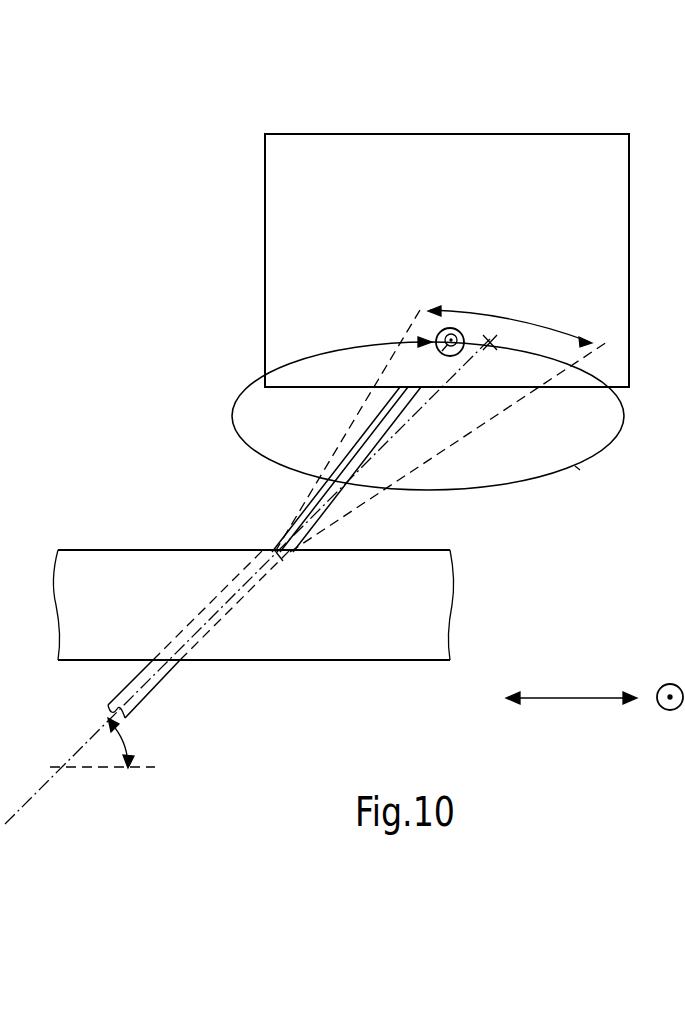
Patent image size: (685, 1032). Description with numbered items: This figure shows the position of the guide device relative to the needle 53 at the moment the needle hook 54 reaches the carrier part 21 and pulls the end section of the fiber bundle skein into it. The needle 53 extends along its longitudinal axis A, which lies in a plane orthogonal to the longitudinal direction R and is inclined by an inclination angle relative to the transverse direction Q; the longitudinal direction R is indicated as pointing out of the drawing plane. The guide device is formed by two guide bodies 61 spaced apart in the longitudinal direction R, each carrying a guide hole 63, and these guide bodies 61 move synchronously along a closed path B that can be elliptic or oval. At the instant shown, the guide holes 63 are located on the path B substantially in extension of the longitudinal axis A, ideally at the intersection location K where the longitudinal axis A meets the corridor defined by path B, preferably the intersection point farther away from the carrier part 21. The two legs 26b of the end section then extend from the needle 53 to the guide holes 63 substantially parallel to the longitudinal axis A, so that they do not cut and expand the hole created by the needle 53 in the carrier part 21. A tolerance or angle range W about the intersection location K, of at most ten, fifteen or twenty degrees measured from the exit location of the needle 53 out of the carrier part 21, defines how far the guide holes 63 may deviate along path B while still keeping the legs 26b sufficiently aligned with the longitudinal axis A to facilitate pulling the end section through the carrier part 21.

The guide body 61 is at (443, 133).
The guide hole 63 is at (460, 331).
The leg 26b is at (383, 418).
The carrier part 21 is at (428, 617).
The needle 53 is at (160, 690).
The needle hook 54 is at (283, 563).
The longitudinal axis A is at (32, 795).
The tolerance or angle range W is at (463, 310).
The intersection location K is at (492, 342).
The path B is at (578, 468).
The longitudinal direction R is at (668, 682).
The transverse direction Q is at (572, 700).